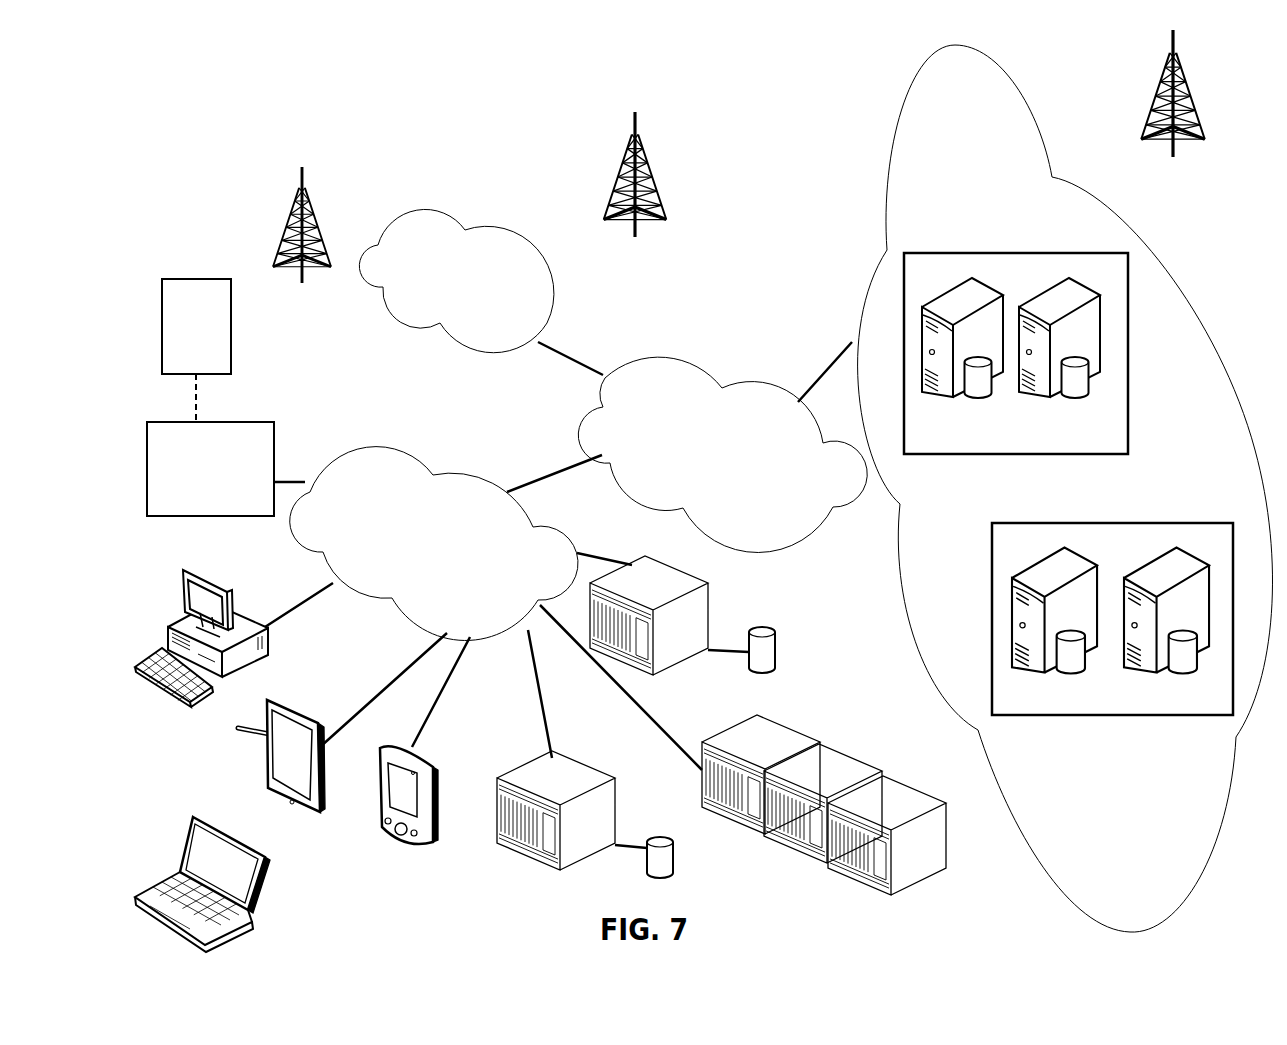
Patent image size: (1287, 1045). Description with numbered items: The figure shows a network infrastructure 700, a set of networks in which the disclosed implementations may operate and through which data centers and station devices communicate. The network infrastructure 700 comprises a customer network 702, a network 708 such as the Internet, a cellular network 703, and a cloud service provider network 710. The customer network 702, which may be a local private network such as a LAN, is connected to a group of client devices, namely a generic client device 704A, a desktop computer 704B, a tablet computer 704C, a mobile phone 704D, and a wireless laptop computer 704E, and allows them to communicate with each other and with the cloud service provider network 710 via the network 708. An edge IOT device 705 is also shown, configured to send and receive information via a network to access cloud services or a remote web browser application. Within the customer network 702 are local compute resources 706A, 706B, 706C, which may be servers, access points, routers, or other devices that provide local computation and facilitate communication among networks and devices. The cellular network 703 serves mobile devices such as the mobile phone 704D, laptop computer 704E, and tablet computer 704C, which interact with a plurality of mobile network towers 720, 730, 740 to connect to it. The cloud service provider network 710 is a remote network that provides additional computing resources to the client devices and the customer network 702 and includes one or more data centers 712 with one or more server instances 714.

The network infrastructure 700 is at (387, 143).
The customer network 702 is at (402, 455).
The cellular network 703 is at (490, 232).
The client device 704A is at (238, 422).
The desktop computer 704B is at (213, 580).
The tablet computer 704C is at (293, 707).
The mobile phone 704D is at (430, 762).
The laptop computer 704E is at (270, 860).
The edge IOT device 705 is at (173, 279).
The local compute resource 706A is at (558, 780).
The local compute resource 706B is at (708, 607).
The local compute resource 706C is at (775, 723).
The network 708 is at (662, 358).
The cloud service provider network 710 is at (1172, 255).
The data center 712 is at (945, 253).
The server instance 714 is at (972, 395).
The mobile network tower 720 is at (635, 192).
The mobile network tower 730 is at (302, 247).
The mobile network tower 740 is at (1173, 110).